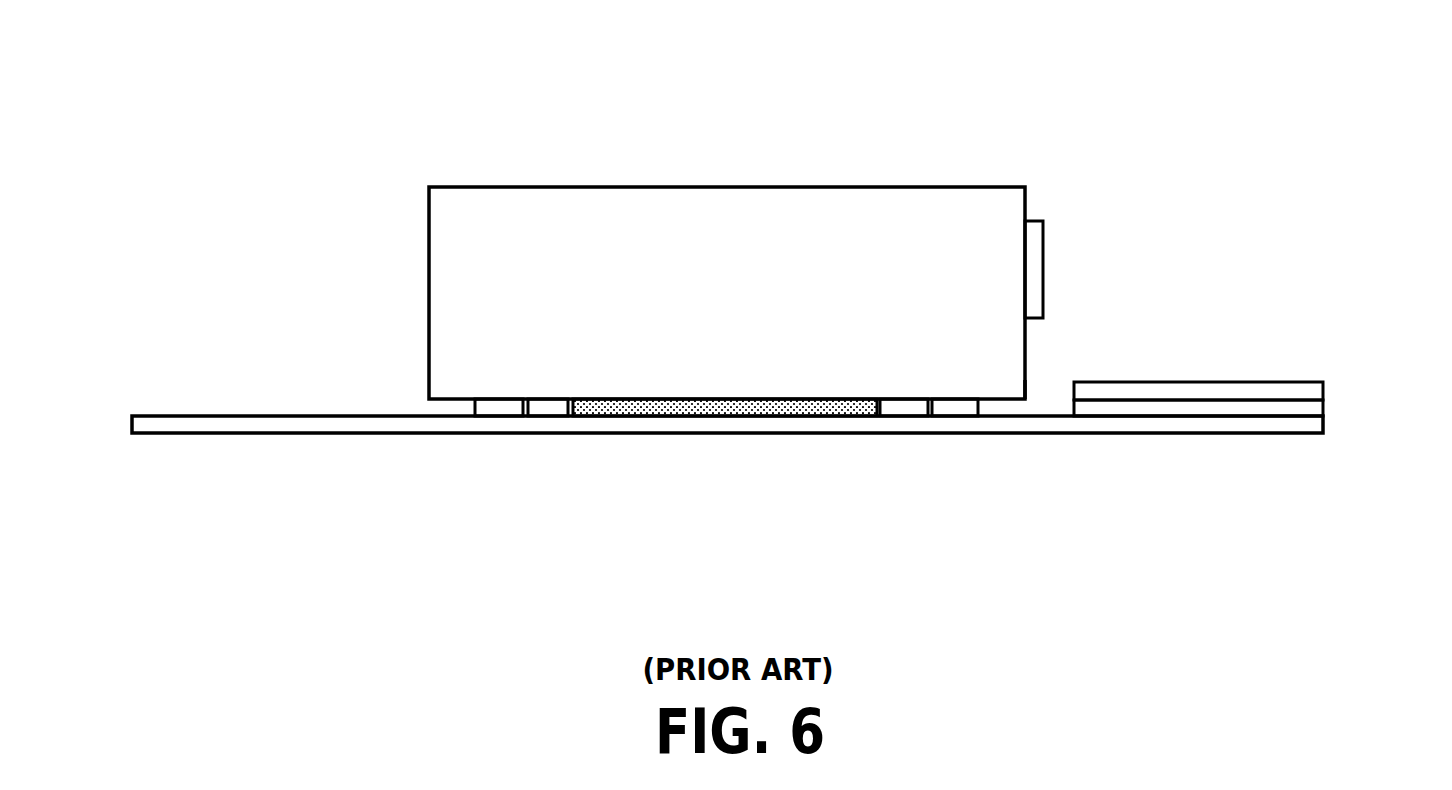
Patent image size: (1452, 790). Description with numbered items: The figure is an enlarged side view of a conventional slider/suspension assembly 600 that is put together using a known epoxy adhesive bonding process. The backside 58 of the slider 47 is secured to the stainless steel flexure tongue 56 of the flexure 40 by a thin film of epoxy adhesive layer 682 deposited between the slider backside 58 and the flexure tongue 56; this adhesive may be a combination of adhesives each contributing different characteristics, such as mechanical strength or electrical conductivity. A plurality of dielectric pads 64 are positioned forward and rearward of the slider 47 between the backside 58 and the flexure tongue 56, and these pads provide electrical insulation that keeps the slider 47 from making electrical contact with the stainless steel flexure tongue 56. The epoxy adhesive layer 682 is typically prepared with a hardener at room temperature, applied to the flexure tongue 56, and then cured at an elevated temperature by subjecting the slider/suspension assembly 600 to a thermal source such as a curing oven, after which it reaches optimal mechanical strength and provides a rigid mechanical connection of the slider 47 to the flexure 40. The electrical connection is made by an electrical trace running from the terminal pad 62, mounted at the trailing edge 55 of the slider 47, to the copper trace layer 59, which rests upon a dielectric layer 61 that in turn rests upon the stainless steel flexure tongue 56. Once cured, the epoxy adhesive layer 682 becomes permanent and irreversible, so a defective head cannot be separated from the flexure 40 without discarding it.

The slider/suspension assembly 600 is at (707, 42).
The slider 47 is at (757, 307).
The terminal pad 62 is at (1034, 259).
The trailing edge 55 is at (1030, 205).
The backside 58 is at (1052, 365).
The dielectric pads 64 is at (813, 438).
The epoxy adhesive layer 682 is at (746, 436).
The flexure 40 is at (788, 396).
The flexure tongue 56 is at (679, 481).
The copper trace layer 59 is at (1198, 355).
The dielectric layer 61 is at (1198, 439).